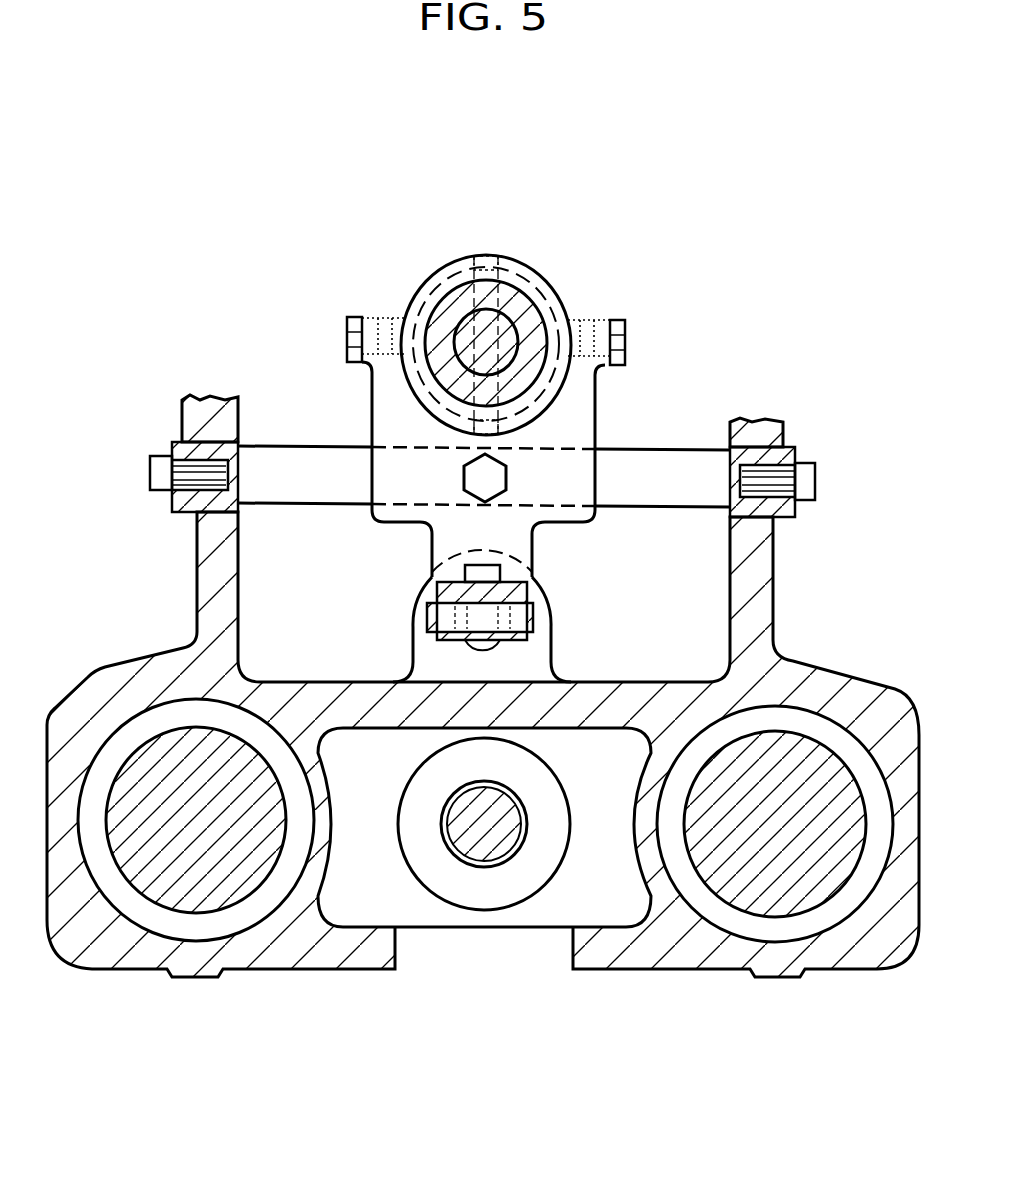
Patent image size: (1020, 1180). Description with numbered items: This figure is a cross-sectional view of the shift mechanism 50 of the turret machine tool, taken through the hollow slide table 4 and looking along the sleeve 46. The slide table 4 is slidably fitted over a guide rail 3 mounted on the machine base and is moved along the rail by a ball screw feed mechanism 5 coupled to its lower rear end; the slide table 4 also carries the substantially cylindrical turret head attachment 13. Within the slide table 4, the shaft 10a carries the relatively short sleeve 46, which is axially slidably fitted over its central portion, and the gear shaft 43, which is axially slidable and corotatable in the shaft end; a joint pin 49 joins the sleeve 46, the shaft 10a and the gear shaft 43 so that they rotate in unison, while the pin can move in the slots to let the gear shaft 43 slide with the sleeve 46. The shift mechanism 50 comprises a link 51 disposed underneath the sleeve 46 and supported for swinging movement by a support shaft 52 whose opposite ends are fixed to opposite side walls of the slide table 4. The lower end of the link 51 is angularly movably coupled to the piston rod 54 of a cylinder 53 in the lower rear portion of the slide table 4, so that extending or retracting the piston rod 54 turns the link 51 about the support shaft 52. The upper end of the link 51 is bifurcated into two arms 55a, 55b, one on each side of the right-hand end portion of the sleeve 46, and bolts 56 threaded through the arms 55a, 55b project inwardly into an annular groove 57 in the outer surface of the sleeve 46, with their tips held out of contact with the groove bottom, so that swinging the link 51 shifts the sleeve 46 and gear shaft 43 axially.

The guide rail 3 is at (811, 788).
The slide table 4 is at (810, 657).
The ball screw feed mechanism 5 is at (472, 878).
The shaft 10a is at (553, 283).
The turret head attachment 13 is at (773, 590).
The gear shaft 43 is at (522, 308).
The sleeve 46 is at (438, 268).
The joint pin 49 is at (506, 270).
The shift mechanism 50 is at (607, 407).
The link 51 is at (597, 431).
The support shaft 52 is at (290, 447).
The cylinder 53 is at (547, 590).
The piston rod 54 is at (478, 643).
The arm 55a is at (385, 382).
The arm 55b is at (577, 392).
The bolt 56 is at (352, 317).
The annular groove 57 is at (423, 292).